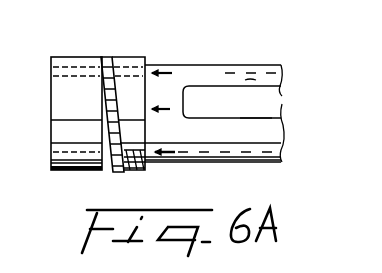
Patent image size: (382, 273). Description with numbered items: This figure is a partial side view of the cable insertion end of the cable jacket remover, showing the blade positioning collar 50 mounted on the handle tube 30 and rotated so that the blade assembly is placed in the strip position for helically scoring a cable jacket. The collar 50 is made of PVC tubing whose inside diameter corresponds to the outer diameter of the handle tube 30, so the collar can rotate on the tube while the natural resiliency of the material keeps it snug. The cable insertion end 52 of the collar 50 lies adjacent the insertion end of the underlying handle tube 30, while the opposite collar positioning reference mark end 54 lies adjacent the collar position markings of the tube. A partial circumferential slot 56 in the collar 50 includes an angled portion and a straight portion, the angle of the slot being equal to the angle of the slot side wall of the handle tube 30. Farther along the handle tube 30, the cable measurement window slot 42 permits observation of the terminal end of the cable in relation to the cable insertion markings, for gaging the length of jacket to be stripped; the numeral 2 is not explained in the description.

The conductor 2 is at (256, 119).
The handle tube 30 is at (263, 65).
The cable measurement window slot 42 is at (275, 89).
The blade positioning collar 50 is at (73, 62).
The cable insertion end 52 is at (52, 170).
The collar positioning reference mark end 54 is at (133, 166).
The partial circumferential slot 56 is at (106, 59).